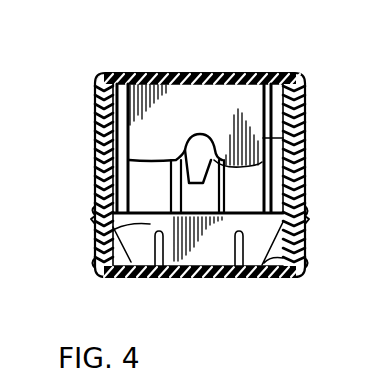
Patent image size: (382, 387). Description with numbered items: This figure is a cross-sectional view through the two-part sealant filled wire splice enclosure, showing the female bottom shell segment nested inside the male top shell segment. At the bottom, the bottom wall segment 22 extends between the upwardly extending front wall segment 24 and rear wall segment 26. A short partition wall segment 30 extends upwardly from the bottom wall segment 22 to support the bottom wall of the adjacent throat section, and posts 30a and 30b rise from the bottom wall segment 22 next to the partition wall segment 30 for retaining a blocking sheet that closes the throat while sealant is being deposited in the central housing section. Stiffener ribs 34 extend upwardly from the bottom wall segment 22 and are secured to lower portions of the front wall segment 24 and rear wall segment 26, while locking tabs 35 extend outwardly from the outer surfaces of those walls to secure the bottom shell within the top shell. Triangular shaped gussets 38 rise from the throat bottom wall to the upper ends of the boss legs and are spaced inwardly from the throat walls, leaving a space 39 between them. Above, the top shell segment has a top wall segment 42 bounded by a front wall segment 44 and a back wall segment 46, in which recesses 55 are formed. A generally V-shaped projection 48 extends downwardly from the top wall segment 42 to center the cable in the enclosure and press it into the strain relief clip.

The bottom wall segment 22 is at (268, 277).
The front wall segment 24 is at (300, 100).
The rear wall segment 26 is at (97, 105).
The partition wall segment 30 is at (128, 252).
The post 30a is at (222, 278).
The post 30b is at (145, 278).
The stiffener rib 34 is at (95, 270).
The locking tab 35 is at (93, 217).
The gusset 38 is at (284, 110).
The space 39 is at (98, 78).
The top wall segment 42 is at (208, 73).
The front wall segment 44 is at (300, 172).
The back wall segment 46 is at (97, 143).
The V-shaped projection 48 is at (140, 92).
The recess 55 is at (93, 209).